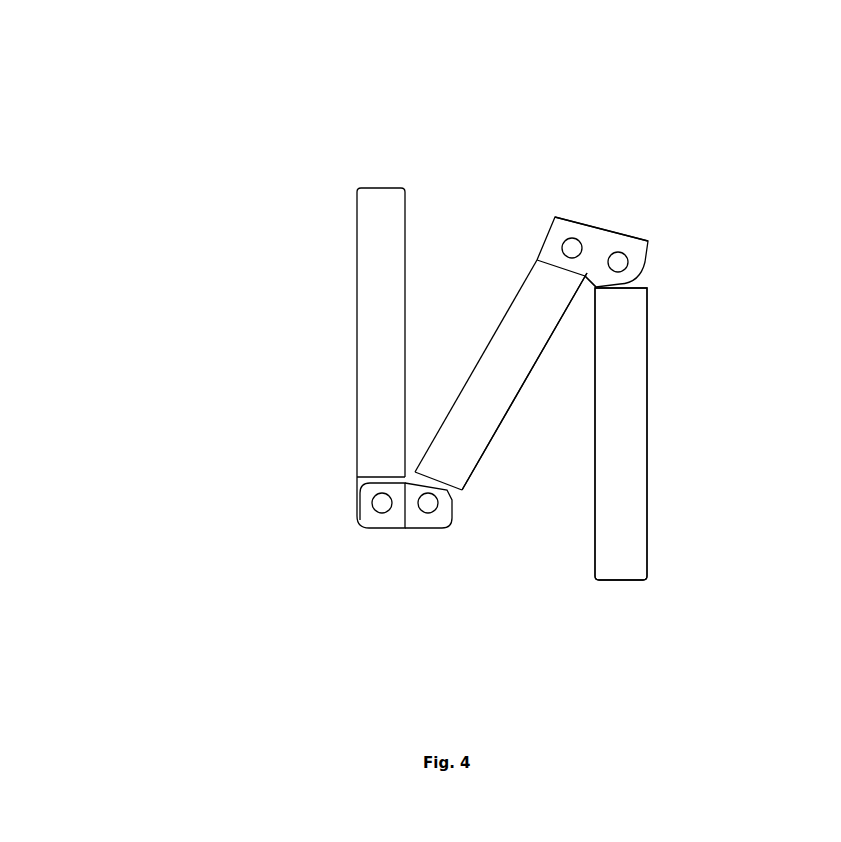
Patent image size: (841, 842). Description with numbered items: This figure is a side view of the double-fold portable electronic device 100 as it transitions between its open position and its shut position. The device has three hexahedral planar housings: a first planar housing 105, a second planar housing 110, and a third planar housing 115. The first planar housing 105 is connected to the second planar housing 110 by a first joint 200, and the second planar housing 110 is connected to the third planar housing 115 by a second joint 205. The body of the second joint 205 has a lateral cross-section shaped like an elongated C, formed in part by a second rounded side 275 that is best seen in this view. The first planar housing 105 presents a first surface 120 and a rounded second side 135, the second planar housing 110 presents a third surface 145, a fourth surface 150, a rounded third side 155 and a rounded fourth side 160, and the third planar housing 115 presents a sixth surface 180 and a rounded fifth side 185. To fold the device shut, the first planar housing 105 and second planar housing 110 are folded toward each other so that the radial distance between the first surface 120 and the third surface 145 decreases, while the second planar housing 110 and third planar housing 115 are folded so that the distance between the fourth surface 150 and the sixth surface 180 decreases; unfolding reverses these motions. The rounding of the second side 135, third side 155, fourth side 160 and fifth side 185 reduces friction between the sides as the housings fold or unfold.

The double-fold portable electronic device 100 is at (245, 622).
The first planar housing 105 is at (293, 343).
The second planar housing 110 is at (487, 208).
The third planar housing 115 is at (667, 495).
The first surface 120 is at (404, 233).
The second side 135 is at (396, 527).
The third surface 145 is at (508, 303).
The fourth surface 150 is at (525, 377).
The third side 155 is at (418, 527).
The fourth side 160 is at (582, 222).
The sixth surface 180 is at (593, 420).
The fifth side 185 is at (610, 228).
The first joint 200 is at (398, 578).
The second joint 205 is at (600, 192).
The second rounded side 275 is at (585, 272).